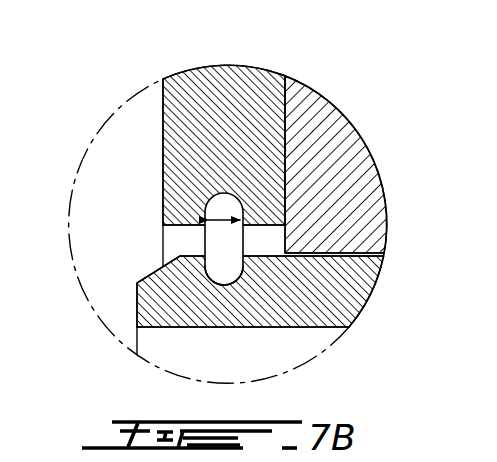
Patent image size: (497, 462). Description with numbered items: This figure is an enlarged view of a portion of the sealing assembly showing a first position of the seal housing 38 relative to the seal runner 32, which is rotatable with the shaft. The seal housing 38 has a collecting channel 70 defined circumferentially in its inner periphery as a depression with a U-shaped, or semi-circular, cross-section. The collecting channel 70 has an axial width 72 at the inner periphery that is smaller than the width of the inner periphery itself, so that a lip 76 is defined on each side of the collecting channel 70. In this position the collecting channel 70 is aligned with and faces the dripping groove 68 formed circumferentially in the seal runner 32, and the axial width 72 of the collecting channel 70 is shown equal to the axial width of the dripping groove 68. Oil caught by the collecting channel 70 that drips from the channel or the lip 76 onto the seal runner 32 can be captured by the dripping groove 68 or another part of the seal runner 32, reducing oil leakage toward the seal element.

The seal housing 38 is at (193, 103).
The collecting channel 70 is at (250, 184).
The axial width 72 is at (222, 215).
The lip 76 is at (183, 227).
The seal runner 32 is at (179, 316).
The dripping groove 68 is at (247, 286).